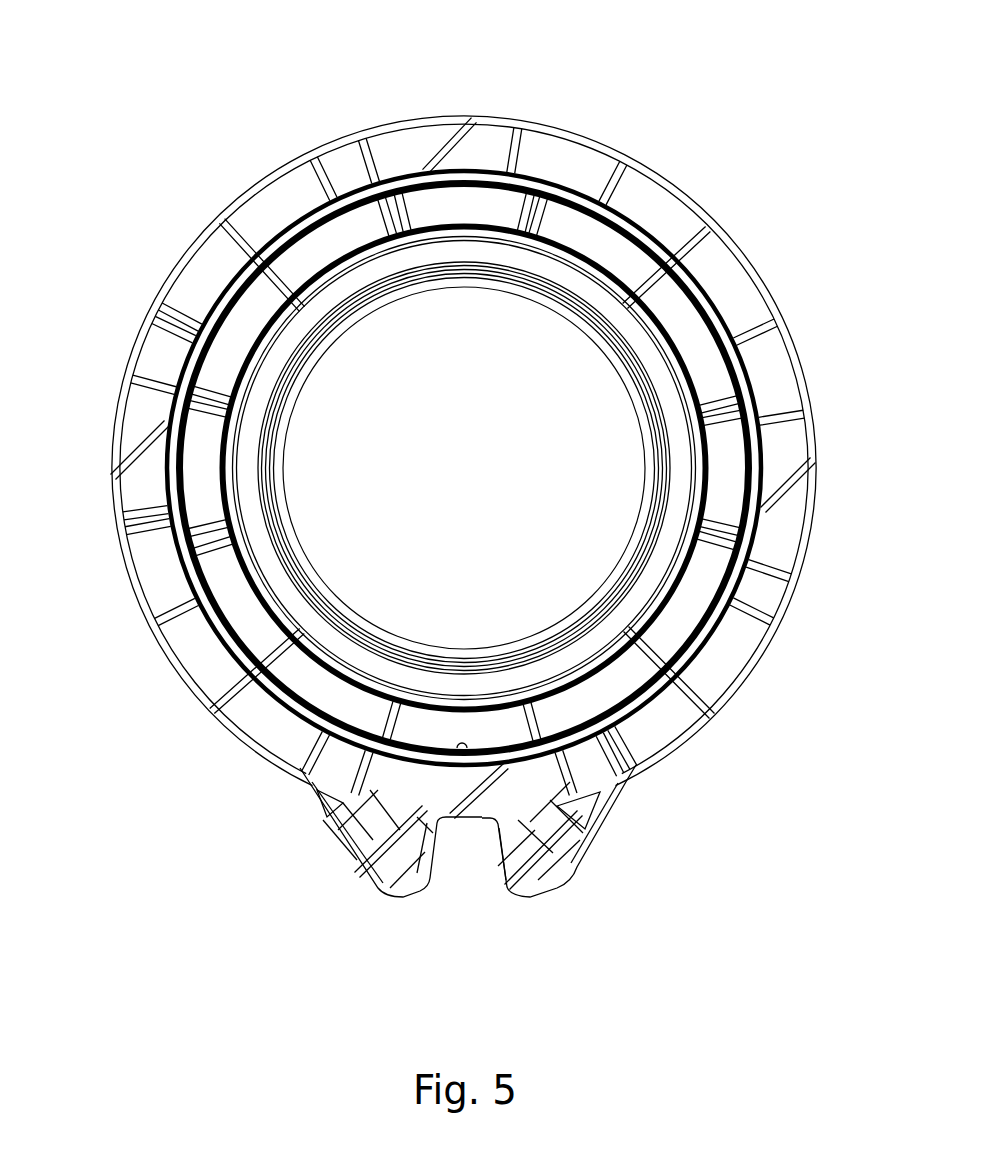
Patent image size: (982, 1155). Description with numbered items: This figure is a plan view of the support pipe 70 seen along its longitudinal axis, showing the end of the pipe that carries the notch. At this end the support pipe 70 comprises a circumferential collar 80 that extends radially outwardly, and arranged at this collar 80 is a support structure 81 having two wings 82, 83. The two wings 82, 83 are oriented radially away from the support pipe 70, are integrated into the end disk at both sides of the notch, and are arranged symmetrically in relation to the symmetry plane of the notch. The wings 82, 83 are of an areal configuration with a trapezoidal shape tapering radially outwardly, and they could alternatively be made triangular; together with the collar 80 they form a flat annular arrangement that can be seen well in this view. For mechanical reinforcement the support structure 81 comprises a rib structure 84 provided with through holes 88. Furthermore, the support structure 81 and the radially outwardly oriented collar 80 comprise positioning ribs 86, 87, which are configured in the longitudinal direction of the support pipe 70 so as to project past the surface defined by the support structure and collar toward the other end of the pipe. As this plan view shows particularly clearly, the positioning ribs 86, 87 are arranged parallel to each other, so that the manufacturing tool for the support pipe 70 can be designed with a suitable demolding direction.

The support pipe 70 is at (238, 130).
The collar 80 is at (705, 232).
The support structure 81 is at (453, 881).
The wing 82 is at (392, 895).
The wing 83 is at (567, 884).
The rib structure 84 is at (365, 853).
The positioning rib 86 is at (418, 853).
The positioning rib 87 is at (434, 124).
The through hole 88 is at (343, 832).